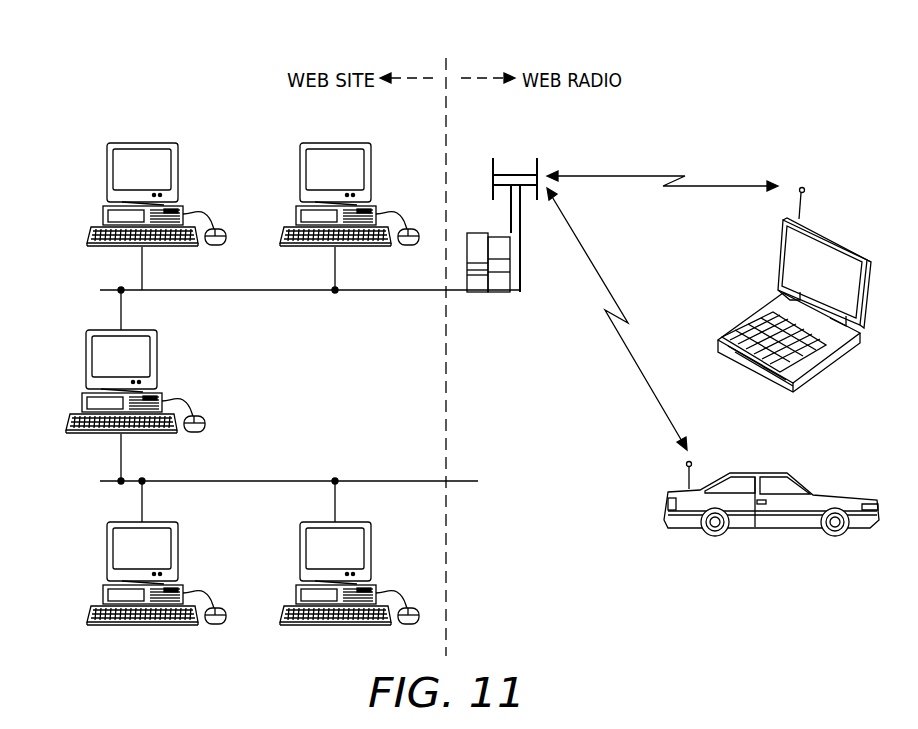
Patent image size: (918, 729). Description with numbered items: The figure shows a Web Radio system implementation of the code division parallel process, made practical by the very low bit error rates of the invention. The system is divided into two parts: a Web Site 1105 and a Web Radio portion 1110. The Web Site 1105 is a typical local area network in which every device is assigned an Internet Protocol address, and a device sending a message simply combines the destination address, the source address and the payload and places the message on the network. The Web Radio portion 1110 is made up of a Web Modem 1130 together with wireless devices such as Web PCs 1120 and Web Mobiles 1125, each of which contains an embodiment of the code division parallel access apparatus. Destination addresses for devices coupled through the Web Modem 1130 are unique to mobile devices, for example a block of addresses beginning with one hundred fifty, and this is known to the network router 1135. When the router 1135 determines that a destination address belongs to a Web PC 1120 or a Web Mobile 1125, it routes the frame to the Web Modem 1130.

The Web Site 1105 is at (243, 66).
The Web Radio portion 1110 is at (650, 66).
The Web personal computer 1120 is at (830, 240).
The Web Mobile 1125 is at (666, 518).
The Web Modem 1130 is at (514, 160).
The network router 1135 is at (87, 360).